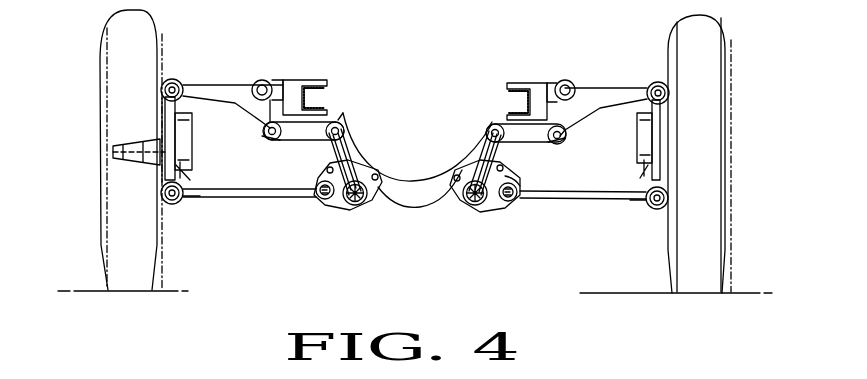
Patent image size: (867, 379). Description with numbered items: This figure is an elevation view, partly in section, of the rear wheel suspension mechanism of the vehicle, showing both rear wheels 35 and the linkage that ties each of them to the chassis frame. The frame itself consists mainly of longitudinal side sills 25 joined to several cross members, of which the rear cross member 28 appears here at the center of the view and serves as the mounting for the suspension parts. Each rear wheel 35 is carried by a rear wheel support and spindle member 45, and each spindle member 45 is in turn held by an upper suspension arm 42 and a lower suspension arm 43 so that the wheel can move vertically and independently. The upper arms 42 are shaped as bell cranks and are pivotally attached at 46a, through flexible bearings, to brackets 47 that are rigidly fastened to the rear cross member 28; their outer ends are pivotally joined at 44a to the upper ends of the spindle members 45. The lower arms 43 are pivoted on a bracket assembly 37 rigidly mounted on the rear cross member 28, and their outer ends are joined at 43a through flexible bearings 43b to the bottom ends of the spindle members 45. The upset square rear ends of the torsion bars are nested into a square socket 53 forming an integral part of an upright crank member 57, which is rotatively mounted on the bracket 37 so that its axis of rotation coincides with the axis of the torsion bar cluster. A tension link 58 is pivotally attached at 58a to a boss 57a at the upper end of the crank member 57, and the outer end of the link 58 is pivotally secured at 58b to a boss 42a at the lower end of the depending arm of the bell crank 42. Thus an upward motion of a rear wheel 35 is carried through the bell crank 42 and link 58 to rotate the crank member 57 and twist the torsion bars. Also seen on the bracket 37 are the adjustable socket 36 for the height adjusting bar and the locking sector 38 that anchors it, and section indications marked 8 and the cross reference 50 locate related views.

The rear wheel 35 is at (106, 44).
The wheel spindle knuckle 50 is at (188, 134).
The rear wheel support and spindle member 45 is at (181, 167).
The pivot joint of bell crank arm outer end 44a is at (181, 80).
The pivot joint of lower arm outer end 43a is at (172, 206).
The flexible bearing 43b is at (186, 198).
The lower suspension arm 43 is at (256, 194).
The upper suspension arm 42 is at (218, 90).
The boss 42a is at (266, 138).
The pivot attachment of upper arm 46a is at (263, 79).
The bracket 47 is at (282, 82).
The longitudinal side sill 25 is at (325, 82).
The tension link 58 is at (293, 139).
The pivot attachment of link outer end 58b is at (272, 143).
The pivot attachment of link to crank 58a is at (340, 121).
The crank member 57 is at (311, 185).
The boss 57a is at (345, 122).
The rear cross member 28 is at (412, 179).
The section line 8- 8 is at (399, 149).
The bracket assembly 37 is at (377, 203).
The square socket 53 is at (362, 214).
The adjustable socket 36 is at (322, 200).
The locking sector 38 is at (522, 185).